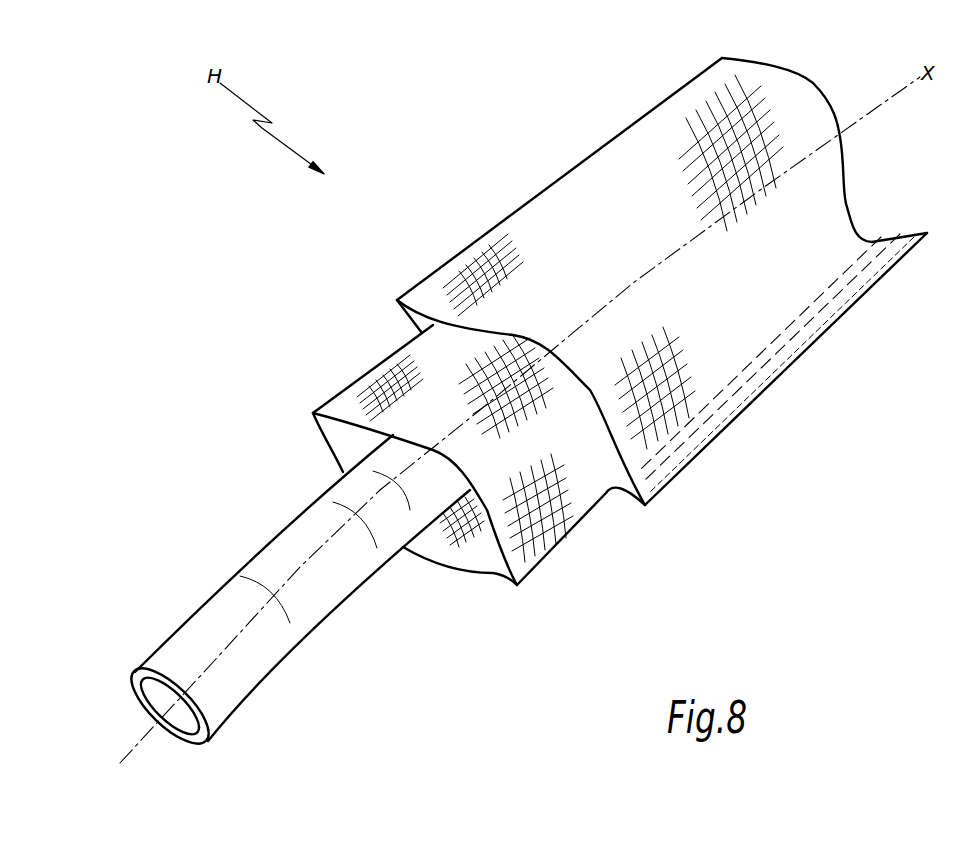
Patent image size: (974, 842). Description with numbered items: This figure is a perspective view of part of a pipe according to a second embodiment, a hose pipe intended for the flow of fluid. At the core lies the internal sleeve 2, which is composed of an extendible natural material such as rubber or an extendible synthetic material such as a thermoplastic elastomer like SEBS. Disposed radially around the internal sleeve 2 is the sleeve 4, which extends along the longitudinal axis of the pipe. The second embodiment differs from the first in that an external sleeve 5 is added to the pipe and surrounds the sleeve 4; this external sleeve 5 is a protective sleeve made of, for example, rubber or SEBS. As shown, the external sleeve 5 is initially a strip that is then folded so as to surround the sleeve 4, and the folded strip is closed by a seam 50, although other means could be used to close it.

The internal sleeve 2 is at (307, 603).
The sleeve 4 is at (335, 410).
The external sleeve 5 is at (795, 273).
The seam 50 is at (740, 403).